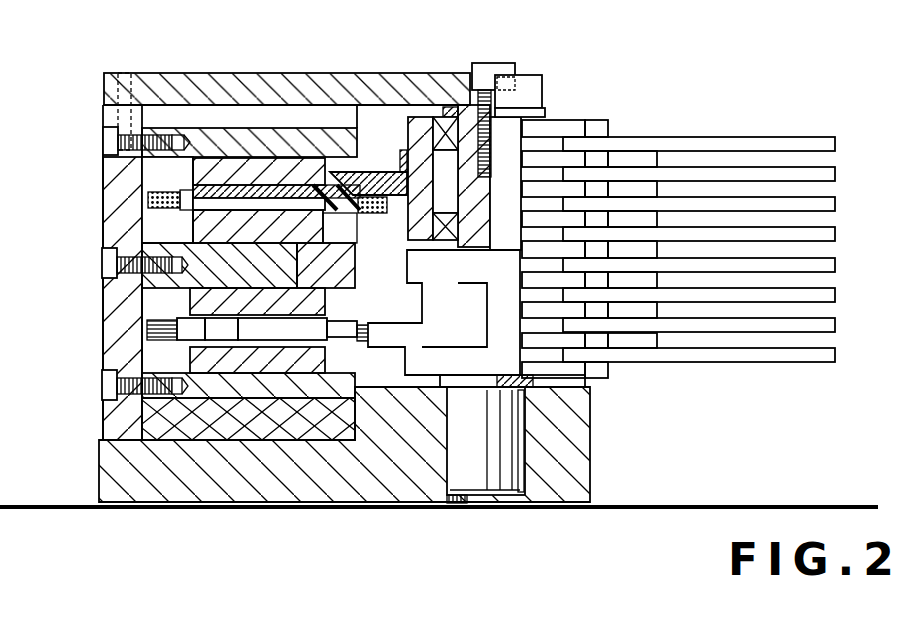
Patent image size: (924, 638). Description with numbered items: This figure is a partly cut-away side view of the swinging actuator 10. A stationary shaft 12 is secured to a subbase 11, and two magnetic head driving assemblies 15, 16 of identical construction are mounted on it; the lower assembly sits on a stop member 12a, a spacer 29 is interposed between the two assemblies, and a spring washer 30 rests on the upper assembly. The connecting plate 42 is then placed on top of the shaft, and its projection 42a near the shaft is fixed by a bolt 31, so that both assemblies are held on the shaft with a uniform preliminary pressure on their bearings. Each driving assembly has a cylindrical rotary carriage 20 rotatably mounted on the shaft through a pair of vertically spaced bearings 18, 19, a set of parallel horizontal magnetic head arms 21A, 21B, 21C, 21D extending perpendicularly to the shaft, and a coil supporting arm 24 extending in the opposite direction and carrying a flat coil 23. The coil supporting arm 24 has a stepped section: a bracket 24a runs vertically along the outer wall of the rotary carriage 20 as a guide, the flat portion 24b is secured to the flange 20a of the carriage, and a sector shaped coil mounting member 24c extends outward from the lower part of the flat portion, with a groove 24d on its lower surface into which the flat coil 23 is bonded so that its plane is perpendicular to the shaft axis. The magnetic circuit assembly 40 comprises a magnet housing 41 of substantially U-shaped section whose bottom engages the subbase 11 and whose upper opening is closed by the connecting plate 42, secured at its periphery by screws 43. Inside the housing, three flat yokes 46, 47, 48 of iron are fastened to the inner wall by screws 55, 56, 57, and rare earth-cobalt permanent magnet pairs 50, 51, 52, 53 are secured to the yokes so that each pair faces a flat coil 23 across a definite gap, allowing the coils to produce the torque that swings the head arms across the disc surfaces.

The swinging actuator 10 is at (769, 88).
The subbase 11 is at (345, 480).
The stationary shaft 12 is at (498, 470).
The stop member 12a is at (522, 398).
The magnetic head driving assembly 15 is at (630, 377).
The magnetic head driving assembly 16 is at (618, 116).
The bearing 18 is at (440, 130).
The bearing 19 is at (445, 220).
The rotary carriage 20 is at (508, 145).
The flange 20a is at (400, 215).
The magnetic head arm 21A is at (836, 143).
The magnetic head arm 21B is at (836, 172).
The magnetic head arm 21C is at (836, 203).
The magnetic head arm 21D is at (836, 233).
The flat coil 23 is at (150, 184).
The coil supporting arm 24 is at (372, 188).
The bracket 24a is at (400, 156).
The flat portion 24b is at (371, 205).
The coil mounting member 24c is at (178, 208).
The groove 24d is at (345, 212).
The spacer 29 is at (455, 247).
The spring washer 30 is at (524, 108).
The bolt 31 is at (487, 70).
The magnetic circuit assembly 40 is at (86, 117).
The magnet housing 41 is at (108, 207).
The connecting plate 42 is at (377, 88).
The projection 42a is at (538, 90).
The screw 43 is at (125, 73).
The flat yoke 46 is at (206, 140).
The flat yoke 47 is at (140, 280).
The flat yoke 48 is at (140, 362).
The permanent magnet pair 50 is at (287, 165).
The permanent magnet pair 51 is at (255, 225).
The permanent magnet pair 52 is at (200, 302).
The permanent magnet pair 53 is at (245, 362).
The screw 55 is at (108, 140).
The screw 56 is at (105, 262).
The screw 57 is at (105, 386).